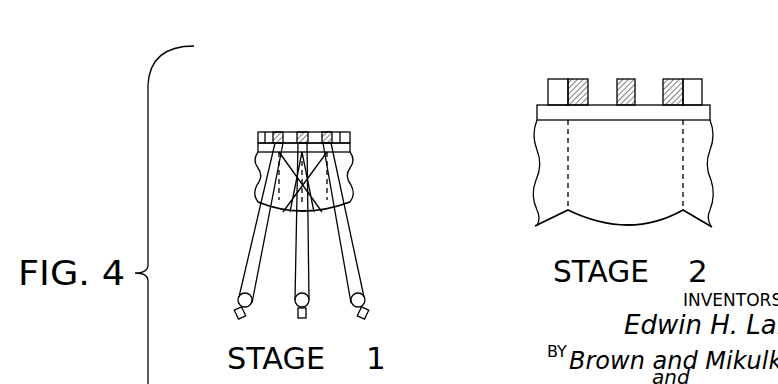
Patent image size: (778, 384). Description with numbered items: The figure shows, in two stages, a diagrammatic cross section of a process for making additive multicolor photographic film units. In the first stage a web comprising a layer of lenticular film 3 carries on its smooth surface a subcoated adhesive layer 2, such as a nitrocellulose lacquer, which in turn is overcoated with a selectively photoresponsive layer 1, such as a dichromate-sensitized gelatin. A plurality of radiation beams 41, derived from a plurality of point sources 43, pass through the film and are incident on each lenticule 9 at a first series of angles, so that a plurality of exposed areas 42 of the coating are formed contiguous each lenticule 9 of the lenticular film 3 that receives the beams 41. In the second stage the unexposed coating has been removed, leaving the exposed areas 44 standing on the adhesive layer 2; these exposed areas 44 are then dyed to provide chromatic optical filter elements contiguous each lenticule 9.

The selectively photoresponsive layer 1 is at (352, 136).
The adhesive layer 2 is at (352, 150).
The lenticular film 3 is at (340, 167).
The lenticule 9 is at (325, 178).
The radiation beams 41 is at (321, 292).
The exposed areas 42 is at (330, 115).
The point sources 43 is at (326, 316).
The exposed areas 44 is at (582, 79).